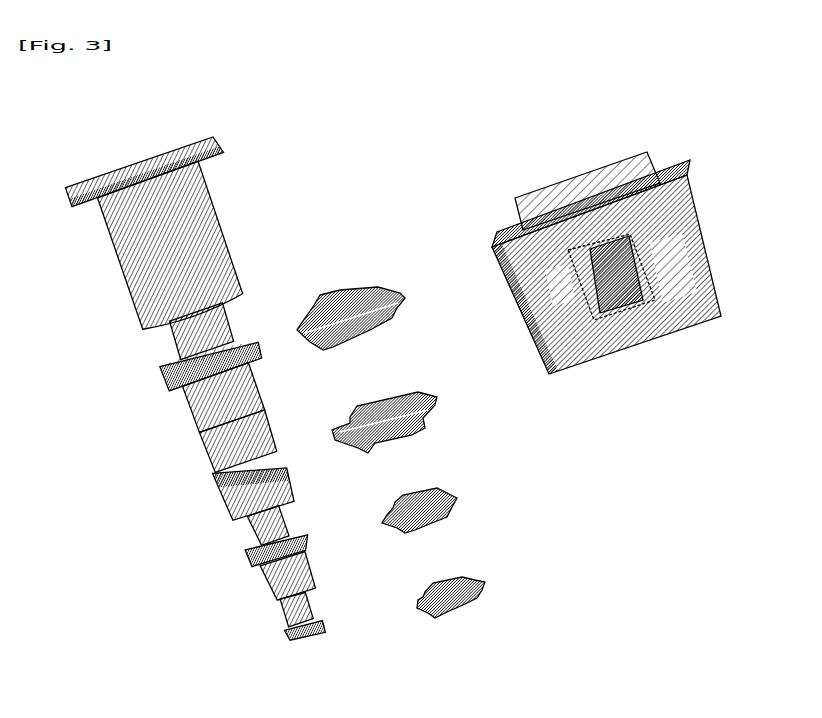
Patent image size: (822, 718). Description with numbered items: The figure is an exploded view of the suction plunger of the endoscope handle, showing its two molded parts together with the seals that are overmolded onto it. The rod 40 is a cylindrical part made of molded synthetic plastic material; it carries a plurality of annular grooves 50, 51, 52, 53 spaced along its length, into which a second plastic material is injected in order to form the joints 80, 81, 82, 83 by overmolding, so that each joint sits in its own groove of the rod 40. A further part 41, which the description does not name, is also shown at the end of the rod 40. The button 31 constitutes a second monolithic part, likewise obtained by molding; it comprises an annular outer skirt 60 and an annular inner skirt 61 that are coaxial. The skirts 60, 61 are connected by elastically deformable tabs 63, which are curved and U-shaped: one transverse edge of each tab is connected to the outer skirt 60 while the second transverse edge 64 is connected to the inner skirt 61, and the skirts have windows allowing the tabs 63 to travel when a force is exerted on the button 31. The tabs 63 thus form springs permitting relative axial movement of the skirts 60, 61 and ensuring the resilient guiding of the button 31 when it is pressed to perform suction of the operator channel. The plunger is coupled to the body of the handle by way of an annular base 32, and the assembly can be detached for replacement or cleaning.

The button 31 is at (589, 260).
The annular base 32 is at (114, 406).
The rod 40 is at (193, 407).
The head plate 41 is at (148, 226).
The annular groove 50 is at (232, 318).
The annular groove 51 is at (270, 433).
The annular groove 52 is at (296, 532).
The annular groove 53 is at (287, 613).
The annular outer skirt 60 is at (682, 228).
The annular inner skirt 61 is at (645, 176).
The elastically deformable tab 63 is at (643, 302).
The second transverse edge 64 is at (600, 312).
The joint 80 is at (388, 298).
The joint 81 is at (432, 420).
The joint 82 is at (450, 498).
The joint 83 is at (487, 580).